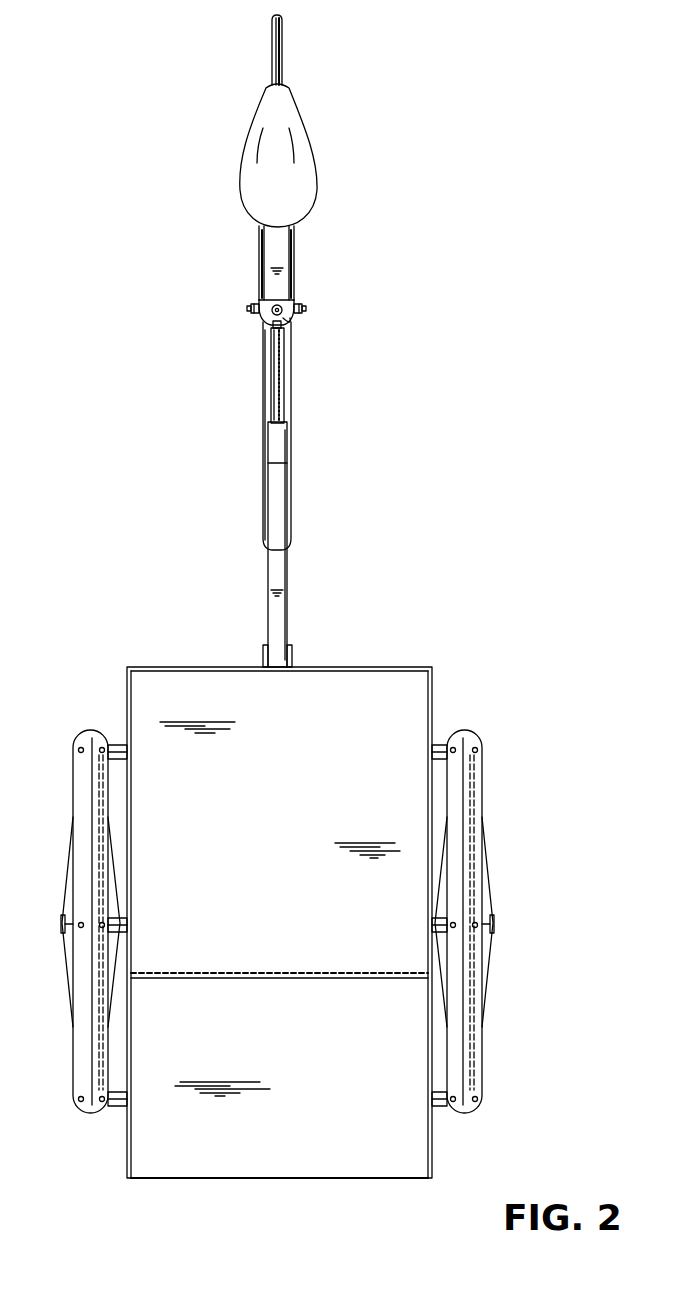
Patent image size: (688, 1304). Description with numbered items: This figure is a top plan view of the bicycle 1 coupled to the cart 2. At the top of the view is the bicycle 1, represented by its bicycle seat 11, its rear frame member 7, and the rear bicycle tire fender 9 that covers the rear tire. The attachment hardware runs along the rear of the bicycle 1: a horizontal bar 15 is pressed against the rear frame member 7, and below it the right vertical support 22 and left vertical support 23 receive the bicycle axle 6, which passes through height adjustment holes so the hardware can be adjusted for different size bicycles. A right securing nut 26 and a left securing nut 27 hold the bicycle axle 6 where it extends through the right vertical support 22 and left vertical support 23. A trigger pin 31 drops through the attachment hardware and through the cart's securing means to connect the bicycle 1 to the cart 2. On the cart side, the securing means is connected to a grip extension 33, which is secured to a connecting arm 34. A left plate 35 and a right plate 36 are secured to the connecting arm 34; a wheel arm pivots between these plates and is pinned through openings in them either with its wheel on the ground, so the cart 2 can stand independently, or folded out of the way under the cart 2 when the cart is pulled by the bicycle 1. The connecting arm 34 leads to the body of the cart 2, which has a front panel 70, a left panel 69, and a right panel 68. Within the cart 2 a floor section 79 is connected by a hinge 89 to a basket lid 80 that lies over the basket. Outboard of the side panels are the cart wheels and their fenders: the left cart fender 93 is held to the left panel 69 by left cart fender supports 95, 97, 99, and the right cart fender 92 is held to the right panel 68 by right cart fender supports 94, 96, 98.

The bicycle 1 is at (286, 62).
The bicycle seat 11 is at (297, 122).
The rear frame member 7 is at (295, 233).
The horizontal bar 15 is at (285, 245).
The left vertical support 23 is at (258, 302).
The right securing nut 26 is at (297, 302).
The bicycle axle 6 is at (303, 306).
The left securing nut 27 is at (249, 311).
The right vertical support 22 is at (289, 318).
The trigger pin 31 is at (275, 316).
The grip extension 33 is at (284, 374).
The rear bicycle tire fender 9 is at (292, 449).
The connecting arm 34 is at (280, 519).
The left plate 35 is at (263, 652).
The right plate 36 is at (292, 652).
The cart 2 is at (427, 1180).
The front panel 70 is at (323, 672).
The left panel 69 is at (131, 776).
The right panel 68 is at (428, 775).
The floor section 79 is at (302, 797).
The hinge 89 is at (256, 970).
The basket lid 80 is at (243, 1170).
The left cart fender 93 is at (75, 797).
The left cart fender support 95 is at (118, 748).
The left cart fender support 97 is at (120, 925).
The left cart fender support 99 is at (117, 1108).
The right cart fender 92 is at (480, 797).
The right cart fender support 94 is at (437, 746).
The right cart fender support 96 is at (438, 925).
The right cart fender support 98 is at (437, 1108).